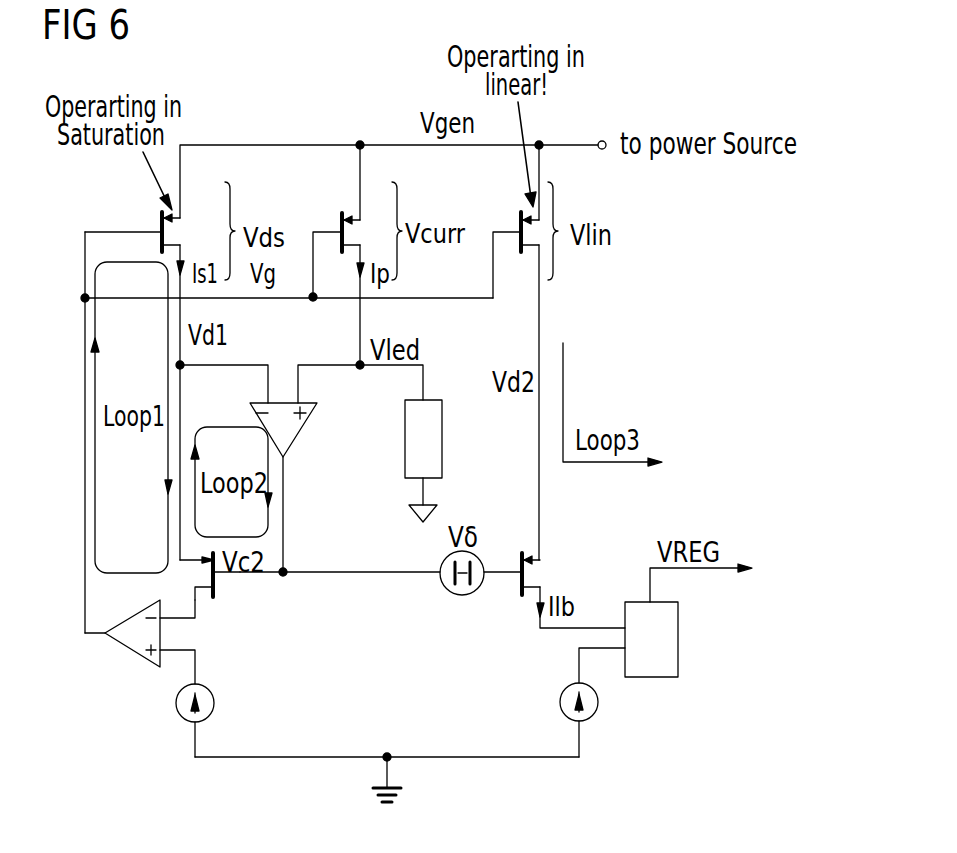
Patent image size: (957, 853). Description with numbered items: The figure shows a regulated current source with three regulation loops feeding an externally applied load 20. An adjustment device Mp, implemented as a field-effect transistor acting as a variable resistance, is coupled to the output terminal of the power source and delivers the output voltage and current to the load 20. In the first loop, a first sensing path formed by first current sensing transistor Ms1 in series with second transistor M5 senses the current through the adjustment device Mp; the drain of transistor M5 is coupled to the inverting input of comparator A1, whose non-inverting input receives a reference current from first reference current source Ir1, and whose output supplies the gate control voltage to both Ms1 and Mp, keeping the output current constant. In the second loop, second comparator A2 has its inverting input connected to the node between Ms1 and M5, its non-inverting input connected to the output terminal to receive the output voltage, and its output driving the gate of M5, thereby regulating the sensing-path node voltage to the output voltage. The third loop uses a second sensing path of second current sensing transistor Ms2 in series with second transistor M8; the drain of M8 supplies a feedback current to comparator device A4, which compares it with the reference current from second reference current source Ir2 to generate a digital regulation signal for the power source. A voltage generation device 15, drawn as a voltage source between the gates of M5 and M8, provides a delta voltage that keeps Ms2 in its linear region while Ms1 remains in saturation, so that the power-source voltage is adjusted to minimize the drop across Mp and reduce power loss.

The voltage generation device 15 is at (465, 596).
The load 20 is at (444, 440).
The first current sensing transistor Ms1 is at (159, 222).
The adjustment device Mp is at (338, 214).
The second current sensing transistor Ms2 is at (517, 214).
The second transistor M5 is at (218, 589).
The second transistor of second sensing path M8 is at (542, 579).
The comparator A1 is at (141, 666).
The second comparator A2 is at (297, 447).
The comparator device A4 is at (651, 639).
The first reference current source Ir1 is at (216, 703).
The second reference current source Ir2 is at (556, 704).